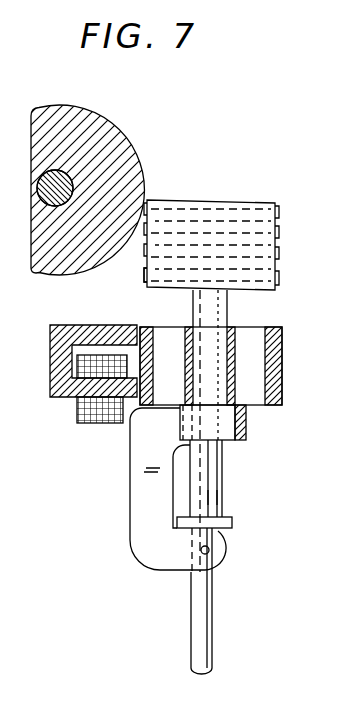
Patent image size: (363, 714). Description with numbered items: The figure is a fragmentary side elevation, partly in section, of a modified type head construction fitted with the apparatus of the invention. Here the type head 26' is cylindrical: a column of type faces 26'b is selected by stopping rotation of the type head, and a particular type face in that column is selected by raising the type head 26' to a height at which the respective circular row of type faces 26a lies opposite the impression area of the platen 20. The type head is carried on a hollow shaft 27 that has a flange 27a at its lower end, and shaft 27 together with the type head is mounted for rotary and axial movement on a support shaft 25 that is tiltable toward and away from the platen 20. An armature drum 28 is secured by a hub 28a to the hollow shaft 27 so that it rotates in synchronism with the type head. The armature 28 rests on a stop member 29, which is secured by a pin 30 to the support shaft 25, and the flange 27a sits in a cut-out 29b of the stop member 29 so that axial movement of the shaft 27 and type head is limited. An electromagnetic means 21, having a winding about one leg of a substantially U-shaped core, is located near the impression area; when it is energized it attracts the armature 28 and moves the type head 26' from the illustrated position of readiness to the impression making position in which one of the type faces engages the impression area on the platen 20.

The platen 20 is at (106, 124).
The electromagnetic means 21 is at (102, 299).
The support shaft 25 is at (205, 627).
The type head 26' is at (211, 217).
The circular row of type faces 26a is at (280, 240).
The column of type faces 26'b is at (140, 292).
The hollow shaft 27 is at (222, 474).
The flange 27a is at (215, 498).
The armature drum 28 is at (280, 355).
The hub 28a is at (232, 392).
The stop member 29 is at (131, 482).
The cut-out 29b is at (217, 531).
The pin 30 is at (209, 553).